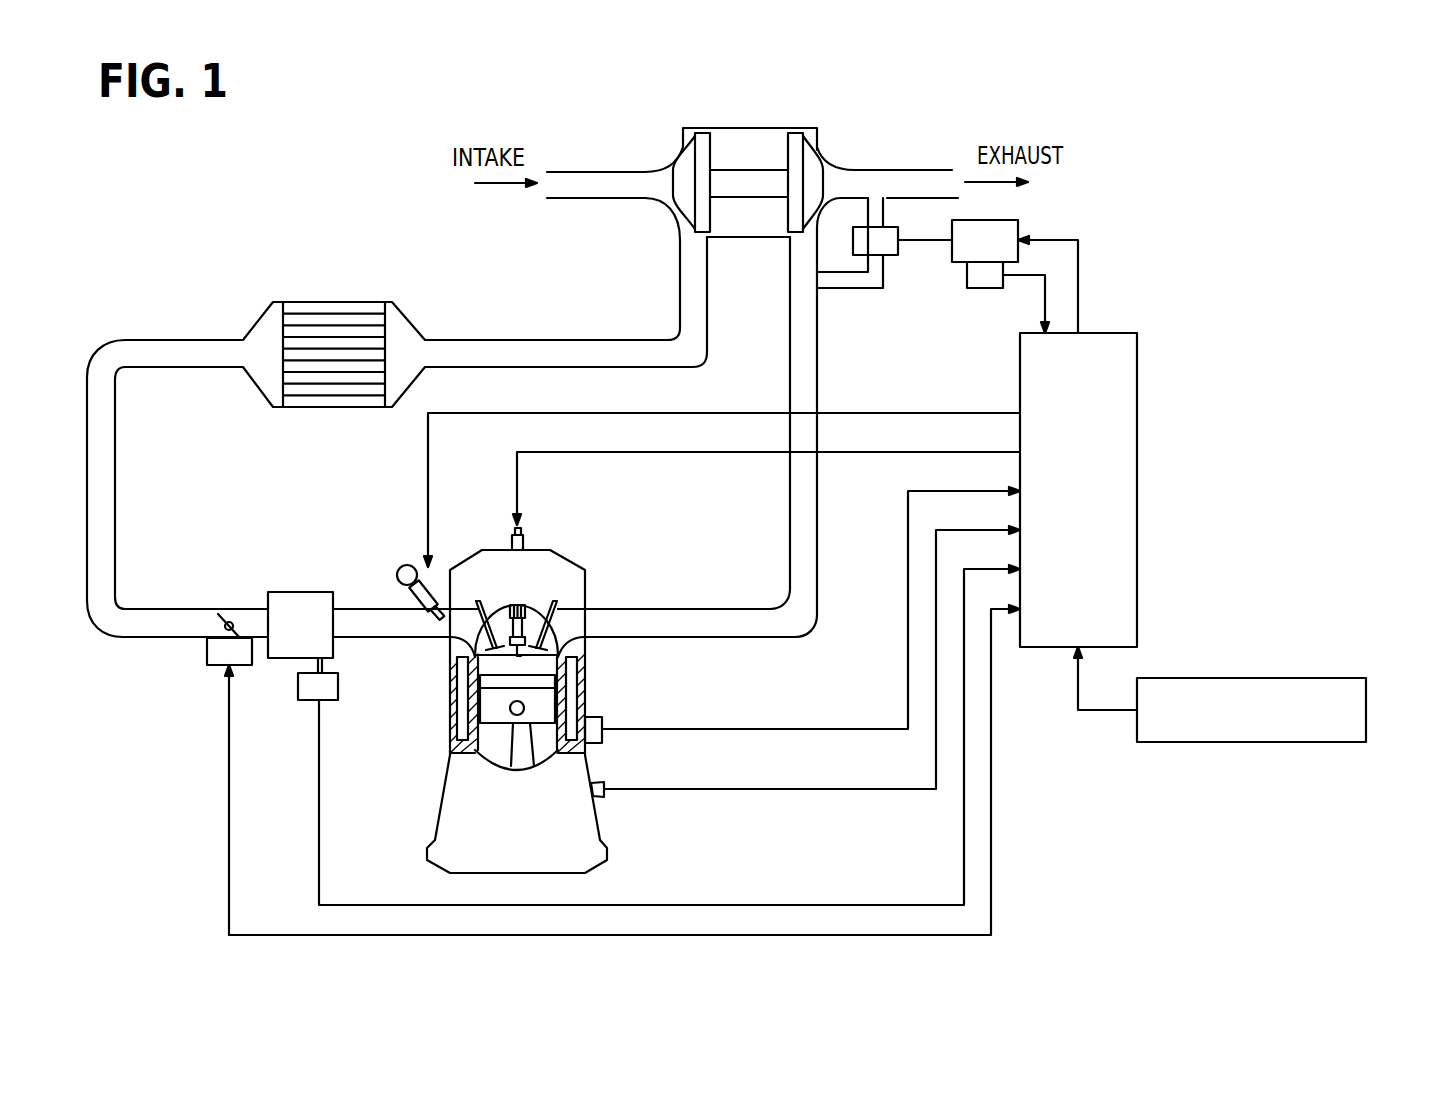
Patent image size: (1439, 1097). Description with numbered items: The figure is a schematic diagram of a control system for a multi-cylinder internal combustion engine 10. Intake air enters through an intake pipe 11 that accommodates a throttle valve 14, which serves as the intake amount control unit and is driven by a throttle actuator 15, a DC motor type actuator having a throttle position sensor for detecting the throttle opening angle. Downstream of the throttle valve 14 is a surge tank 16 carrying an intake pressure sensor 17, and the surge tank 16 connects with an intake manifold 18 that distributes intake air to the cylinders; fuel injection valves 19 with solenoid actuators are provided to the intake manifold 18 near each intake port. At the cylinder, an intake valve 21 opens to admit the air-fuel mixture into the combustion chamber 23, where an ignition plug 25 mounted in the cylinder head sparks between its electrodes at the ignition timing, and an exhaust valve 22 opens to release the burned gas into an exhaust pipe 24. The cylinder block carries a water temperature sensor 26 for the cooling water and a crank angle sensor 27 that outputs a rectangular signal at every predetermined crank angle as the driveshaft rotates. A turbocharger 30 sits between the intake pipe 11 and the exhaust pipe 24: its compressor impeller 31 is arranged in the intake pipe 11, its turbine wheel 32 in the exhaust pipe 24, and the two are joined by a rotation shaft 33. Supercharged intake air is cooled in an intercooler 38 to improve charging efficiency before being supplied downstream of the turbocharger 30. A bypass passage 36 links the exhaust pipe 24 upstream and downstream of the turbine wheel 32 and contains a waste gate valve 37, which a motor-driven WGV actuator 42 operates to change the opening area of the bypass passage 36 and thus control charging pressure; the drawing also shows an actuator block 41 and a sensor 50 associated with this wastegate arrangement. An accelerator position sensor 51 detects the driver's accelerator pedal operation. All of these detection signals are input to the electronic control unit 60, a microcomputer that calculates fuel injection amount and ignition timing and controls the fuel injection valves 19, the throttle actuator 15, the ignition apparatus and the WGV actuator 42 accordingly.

The internal combustion engine 10 is at (712, 662).
The intake pipe 11 is at (165, 610).
The throttle valve 14 is at (222, 612).
The throttle actuator 15 is at (225, 665).
The surge tank 16 is at (285, 592).
The intake pressure sensor 17 is at (298, 686).
The intake manifold 18 is at (353, 640).
The fuel injection valve 19 is at (410, 600).
The intake valve 21 is at (450, 653).
The exhaust valve 22 is at (585, 655).
The combustion chamber 23 is at (538, 667).
The exhaust pipe 24 is at (708, 607).
The ignition plug 25 is at (528, 633).
The water temperature sensor 26 is at (602, 740).
The crank angle sensor 27 is at (602, 783).
The turbocharger 30 is at (752, 150).
The compressor impeller 31 is at (687, 150).
The turbine wheel 32 is at (811, 150).
The rotation shaft 33 is at (768, 170).
The bypass passage 36 is at (863, 290).
The waste gate valve 37 is at (897, 256).
The intercooler 38 is at (330, 302).
The wastegate actuator 41 is at (930, 240).
The WGV actuator 42 is at (1020, 228).
The wastegate position sensor 50 is at (975, 289).
The accelerator position sensor 51 is at (1367, 710).
The electronic control unit 60 is at (1137, 455).